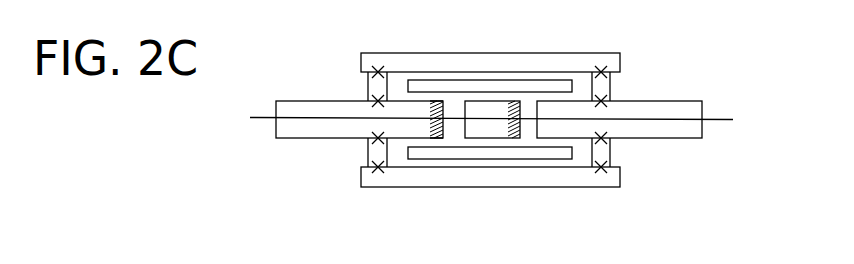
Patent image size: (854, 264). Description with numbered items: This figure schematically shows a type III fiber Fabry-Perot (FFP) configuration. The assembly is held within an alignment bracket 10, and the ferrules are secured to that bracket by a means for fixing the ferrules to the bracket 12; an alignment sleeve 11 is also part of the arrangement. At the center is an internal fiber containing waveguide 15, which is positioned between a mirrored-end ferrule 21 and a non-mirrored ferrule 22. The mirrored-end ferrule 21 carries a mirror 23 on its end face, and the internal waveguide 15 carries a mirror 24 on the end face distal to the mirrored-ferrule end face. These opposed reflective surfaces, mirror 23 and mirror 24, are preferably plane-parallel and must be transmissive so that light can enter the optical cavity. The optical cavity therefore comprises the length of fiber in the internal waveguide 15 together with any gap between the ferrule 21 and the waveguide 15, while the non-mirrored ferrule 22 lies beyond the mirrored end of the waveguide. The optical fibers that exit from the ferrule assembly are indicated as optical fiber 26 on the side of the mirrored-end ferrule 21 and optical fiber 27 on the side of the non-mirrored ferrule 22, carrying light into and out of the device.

The alignment bracket 10 is at (509, 62).
The alignment sleeve 11 is at (563, 158).
The means for fixing the ferrules to the bracket 12 is at (605, 150).
The internal fiber containing waveguide 15 is at (481, 98).
The mirrored-end ferrule 21 is at (330, 110).
The non-mirrored ferrule 22 is at (657, 107).
The mirror 23 is at (434, 129).
The mirror 24 is at (505, 128).
The optical fiber 26 is at (259, 117).
The optical fiber 27 is at (717, 117).